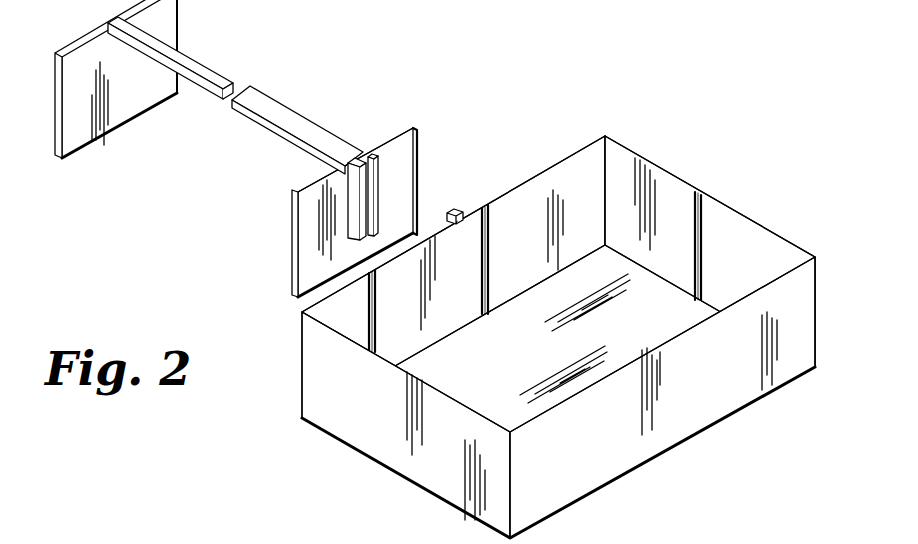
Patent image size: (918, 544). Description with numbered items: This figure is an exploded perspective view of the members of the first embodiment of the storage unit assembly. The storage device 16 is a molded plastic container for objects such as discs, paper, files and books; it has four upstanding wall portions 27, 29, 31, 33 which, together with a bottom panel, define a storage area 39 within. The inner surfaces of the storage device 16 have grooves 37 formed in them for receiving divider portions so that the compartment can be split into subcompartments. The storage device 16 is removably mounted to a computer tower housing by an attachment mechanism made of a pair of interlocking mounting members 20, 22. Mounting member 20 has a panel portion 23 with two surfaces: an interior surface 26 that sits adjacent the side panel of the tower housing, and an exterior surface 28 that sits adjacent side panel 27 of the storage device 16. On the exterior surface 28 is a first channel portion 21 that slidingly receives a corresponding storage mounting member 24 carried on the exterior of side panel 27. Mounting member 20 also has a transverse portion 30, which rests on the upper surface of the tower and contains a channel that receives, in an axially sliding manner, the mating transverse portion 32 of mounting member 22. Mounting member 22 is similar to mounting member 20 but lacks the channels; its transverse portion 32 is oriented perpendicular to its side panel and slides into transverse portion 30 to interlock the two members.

The storage device 16 is at (563, 304).
The mounting member 20 is at (350, 173).
The first channel portion 21 is at (348, 223).
The mounting member 22 is at (73, 160).
The panel portion 23 is at (417, 137).
The storage mounting member 24 is at (462, 210).
The interior surface 26 is at (377, 150).
The side panel 27 is at (580, 148).
The exterior surface 28 is at (413, 192).
The wall portion 29 is at (625, 442).
The transverse portion 30 is at (272, 98).
The wall portion 31 is at (380, 423).
The transverse portion 32 is at (200, 64).
The wall portion 33 is at (715, 234).
The grooves 37 is at (697, 190).
The storage area 39 is at (675, 322).